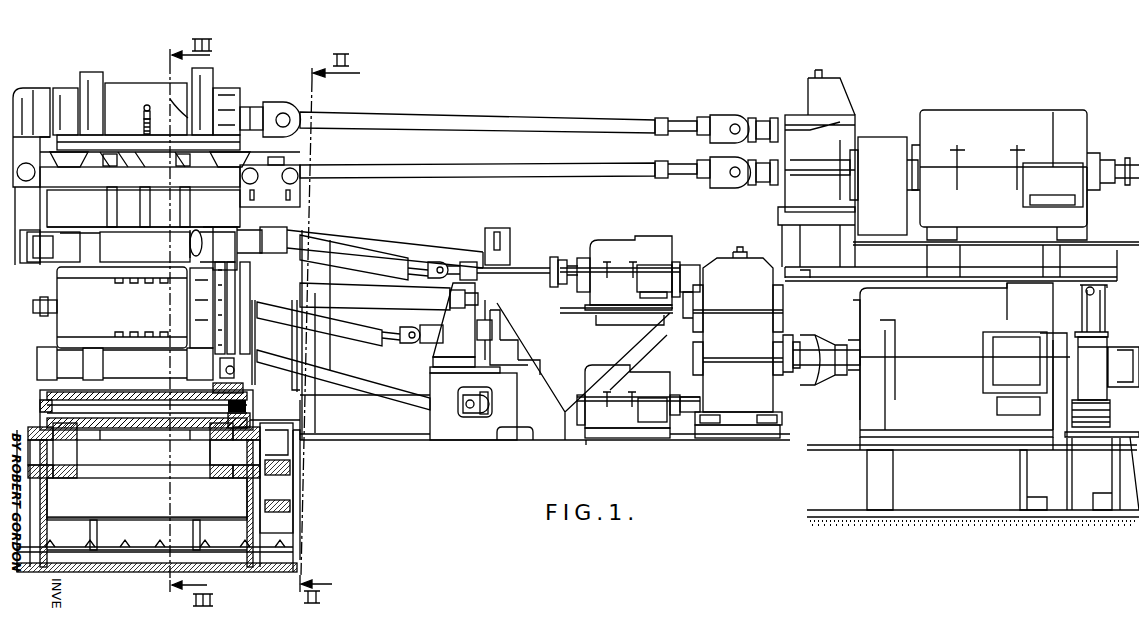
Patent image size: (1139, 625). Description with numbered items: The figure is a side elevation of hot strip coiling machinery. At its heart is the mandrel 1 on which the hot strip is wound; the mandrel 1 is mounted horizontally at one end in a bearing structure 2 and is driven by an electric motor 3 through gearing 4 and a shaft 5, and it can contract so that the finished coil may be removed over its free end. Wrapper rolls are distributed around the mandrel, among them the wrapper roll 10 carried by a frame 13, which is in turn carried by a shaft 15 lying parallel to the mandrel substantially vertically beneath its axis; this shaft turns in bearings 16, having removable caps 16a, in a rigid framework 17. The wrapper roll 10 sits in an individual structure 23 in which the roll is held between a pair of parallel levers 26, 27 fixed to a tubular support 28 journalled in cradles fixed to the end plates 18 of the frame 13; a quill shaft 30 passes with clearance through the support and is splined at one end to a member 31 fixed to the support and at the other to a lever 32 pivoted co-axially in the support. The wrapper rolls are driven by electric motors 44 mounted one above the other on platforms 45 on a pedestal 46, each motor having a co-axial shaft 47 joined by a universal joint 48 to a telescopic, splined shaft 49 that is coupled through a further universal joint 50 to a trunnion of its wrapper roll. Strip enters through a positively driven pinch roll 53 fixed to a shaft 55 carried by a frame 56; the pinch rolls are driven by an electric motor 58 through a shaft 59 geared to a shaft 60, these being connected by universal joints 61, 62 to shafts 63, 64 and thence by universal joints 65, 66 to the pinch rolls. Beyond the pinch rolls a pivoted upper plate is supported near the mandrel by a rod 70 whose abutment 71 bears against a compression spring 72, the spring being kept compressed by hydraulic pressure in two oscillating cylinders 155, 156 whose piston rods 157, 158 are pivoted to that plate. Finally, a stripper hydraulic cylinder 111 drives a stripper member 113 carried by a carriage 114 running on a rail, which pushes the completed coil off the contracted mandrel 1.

The mandrel 1 is at (70, 322).
The bearing structure 2 is at (243, 308).
The electric motor 3 is at (1045, 308).
The gearing 4 is at (762, 332).
The shaft 5 is at (360, 295).
The wrapper roll 10 is at (145, 364).
The frame 13 is at (220, 432).
The shaft 15 is at (152, 468).
The bearings 16 is at (245, 480).
The removable caps 16a is at (250, 418).
The rigid framework 17 is at (245, 532).
The end plates 18 is at (235, 392).
The individual structure 23 is at (80, 390).
The lever 26 is at (179, 369).
The lever 27 is at (103, 367).
The tubular support 28 is at (143, 452).
The quill shaft 30 is at (160, 433).
The member 31 is at (40, 406).
The lever 32 is at (245, 404).
The electric motors 44 is at (660, 247).
The platforms 45 is at (630, 310).
The pedestal 46 is at (430, 408).
The shaft 47 is at (531, 268).
The universal joint 48 is at (443, 268).
The shaft 49 is at (380, 266).
The universal joint 50 is at (240, 372).
The pinch roll 53 is at (137, 82).
The shaft 55 is at (167, 101).
The frame 56 is at (213, 74).
The electric motor 58 is at (1087, 130).
The shaft 59 is at (816, 168).
The shaft 60 is at (773, 126).
The universal joint 61 is at (740, 170).
The universal joint 62 is at (740, 125).
The shaft 63 is at (608, 173).
The shaft 64 is at (606, 118).
The universal joint 65 is at (290, 157).
The universal joint 66 is at (272, 104).
The rod 70 is at (143, 106).
The abutment 71 is at (143, 113).
The compression spring 72 is at (143, 127).
The hydraulic cylinder 111 is at (414, 242).
The stripper member 113 is at (200, 245).
The carriage 114 is at (270, 186).
The oscillating cylinder 155 is at (103, 162).
The oscillating cylinder 156 is at (183, 166).
The piston rod 157 is at (112, 212).
The piston rod 158 is at (176, 215).